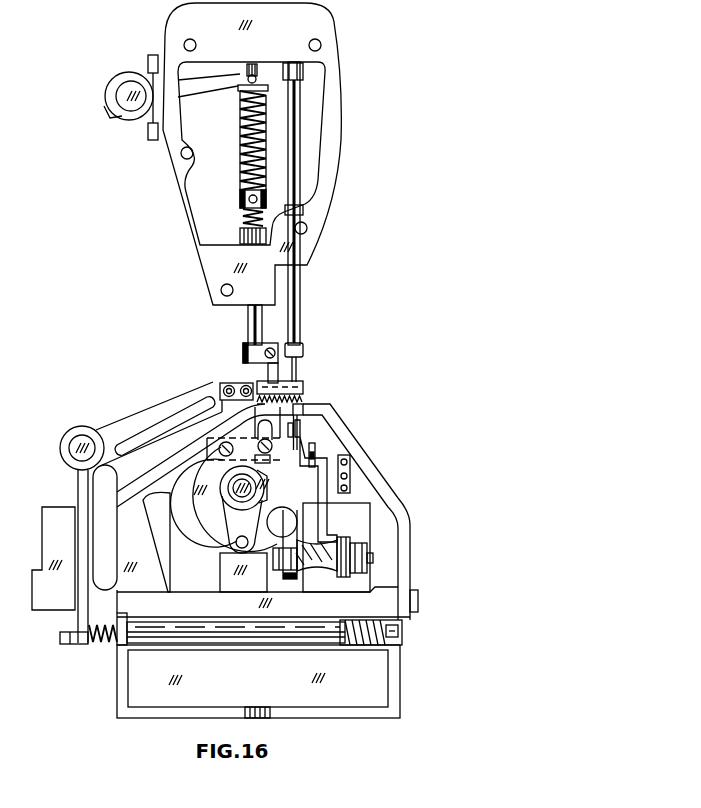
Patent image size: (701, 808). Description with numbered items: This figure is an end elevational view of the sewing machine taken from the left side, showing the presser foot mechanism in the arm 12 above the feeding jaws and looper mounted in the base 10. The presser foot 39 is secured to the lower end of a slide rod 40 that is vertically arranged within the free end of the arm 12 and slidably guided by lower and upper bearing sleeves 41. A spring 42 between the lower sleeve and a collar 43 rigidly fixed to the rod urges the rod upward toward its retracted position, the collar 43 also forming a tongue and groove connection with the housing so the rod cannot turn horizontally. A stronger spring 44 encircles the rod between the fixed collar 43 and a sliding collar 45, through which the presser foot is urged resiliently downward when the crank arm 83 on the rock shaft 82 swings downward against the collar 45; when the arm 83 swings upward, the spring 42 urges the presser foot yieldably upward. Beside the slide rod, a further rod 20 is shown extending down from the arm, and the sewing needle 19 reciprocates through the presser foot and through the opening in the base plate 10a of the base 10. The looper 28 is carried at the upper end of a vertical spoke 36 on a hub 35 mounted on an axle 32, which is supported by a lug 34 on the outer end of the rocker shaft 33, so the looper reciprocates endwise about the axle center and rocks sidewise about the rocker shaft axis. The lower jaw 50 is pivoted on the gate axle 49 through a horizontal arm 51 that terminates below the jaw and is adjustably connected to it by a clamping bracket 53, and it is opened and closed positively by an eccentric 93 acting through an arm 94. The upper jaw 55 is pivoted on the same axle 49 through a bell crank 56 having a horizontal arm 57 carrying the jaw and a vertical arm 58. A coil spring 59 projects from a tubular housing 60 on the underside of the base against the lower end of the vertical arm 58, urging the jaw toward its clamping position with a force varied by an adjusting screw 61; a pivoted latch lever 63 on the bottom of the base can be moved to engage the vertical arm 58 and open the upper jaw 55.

The base 10 is at (190, 612).
The base plate 10a is at (310, 413).
The arm 12 is at (337, 92).
The sewing needle 19 is at (301, 372).
The actuating rod 20 is at (300, 298).
The looper 28 is at (303, 439).
The axle 32 is at (367, 557).
The rocker shaft 33 is at (276, 517).
The lug 34 is at (290, 567).
The hub 35 is at (337, 574).
The vertical spoke 36 is at (327, 522).
The presser foot 39 is at (268, 376).
The slide rod 40 is at (248, 322).
The bearing sleeves 41 is at (242, 240).
The spring 42 is at (242, 216).
The collar 43 is at (240, 197).
The spring 44 is at (238, 160).
The sliding collar 45 is at (258, 80).
The axle 49 is at (75, 451).
The lower jaw 50 is at (303, 409).
The horizontal arm 51 is at (158, 442).
The clamping bracket 53 is at (270, 458).
The upper jaw 55 is at (304, 386).
The bell crank 56 is at (73, 430).
The horizontal arm 57 is at (152, 408).
The vertical arm 58 is at (80, 521).
The coil spring 59 is at (103, 647).
The tubular housing 60 is at (260, 638).
The adjusting screw 61 is at (405, 641).
The latch lever 63 is at (62, 644).
The rock shaft 82 is at (133, 108).
The crank arm 83 is at (200, 88).
The eccentric 93 is at (232, 490).
The arm 94 is at (213, 536).